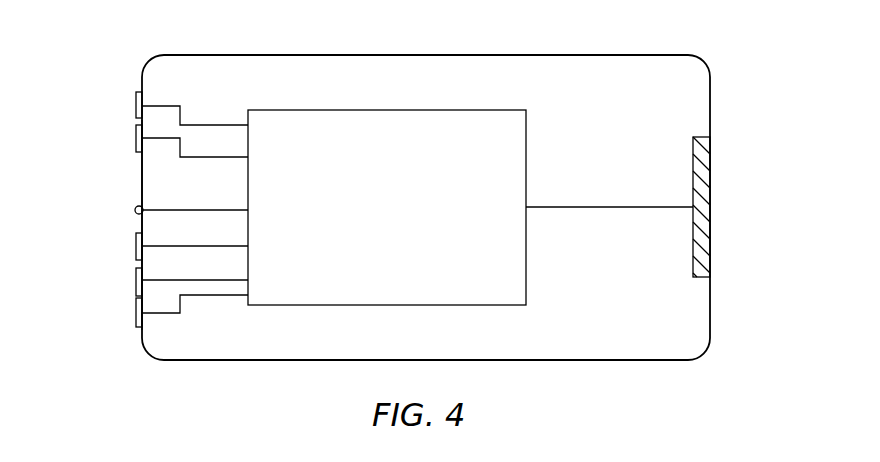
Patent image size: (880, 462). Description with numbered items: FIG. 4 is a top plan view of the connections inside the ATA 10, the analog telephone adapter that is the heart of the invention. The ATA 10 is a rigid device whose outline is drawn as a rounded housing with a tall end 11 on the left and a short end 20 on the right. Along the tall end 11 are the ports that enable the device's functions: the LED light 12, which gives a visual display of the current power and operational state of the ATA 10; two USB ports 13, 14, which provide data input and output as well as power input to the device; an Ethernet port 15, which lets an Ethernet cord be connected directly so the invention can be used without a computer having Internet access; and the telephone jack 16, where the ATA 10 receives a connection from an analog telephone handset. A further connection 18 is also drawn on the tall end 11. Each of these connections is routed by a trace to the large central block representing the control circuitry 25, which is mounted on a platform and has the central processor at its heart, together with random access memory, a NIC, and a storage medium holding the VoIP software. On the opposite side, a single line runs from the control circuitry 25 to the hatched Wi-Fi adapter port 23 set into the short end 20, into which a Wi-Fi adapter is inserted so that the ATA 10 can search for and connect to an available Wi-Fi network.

The ATA 10 is at (134, 45).
The tall end 11 is at (142, 164).
The LED light 12 is at (135, 208).
The USB port 13 is at (136, 104).
The USB port 14 is at (136, 137).
The Ethernet port 15 is at (136, 279).
The telephone jack 16 is at (136, 312).
The contact pad 18 is at (136, 245).
The short end 20 is at (712, 93).
The Wi-Fi adapter port 23 is at (704, 206).
The control circuitry 25 is at (402, 225).